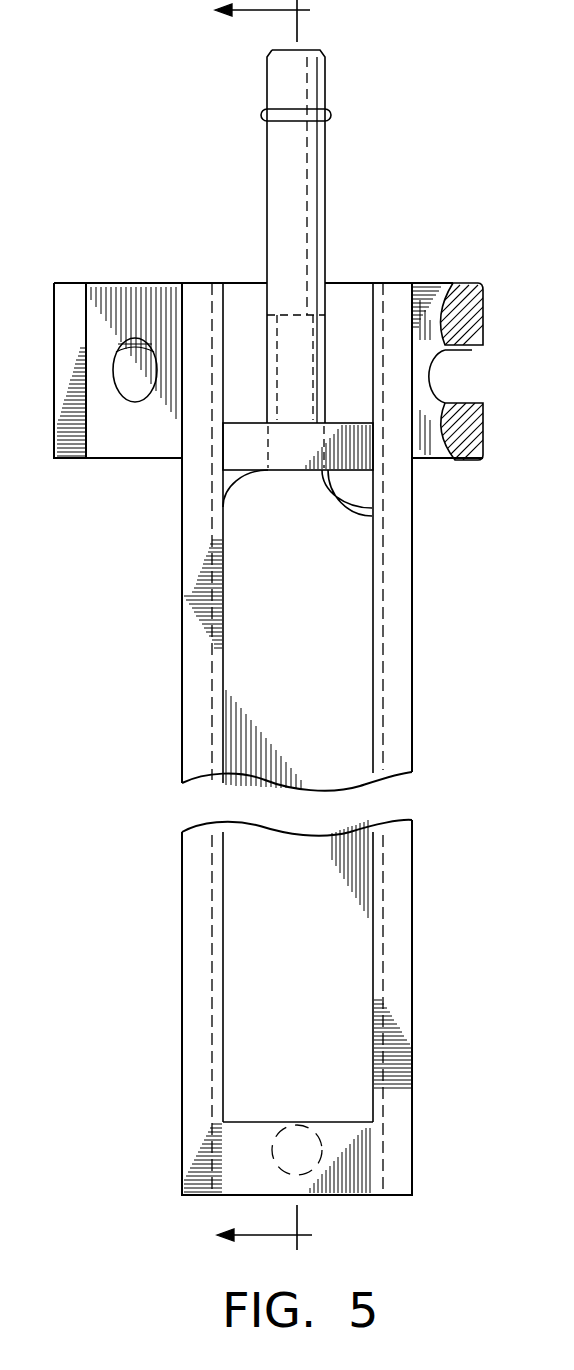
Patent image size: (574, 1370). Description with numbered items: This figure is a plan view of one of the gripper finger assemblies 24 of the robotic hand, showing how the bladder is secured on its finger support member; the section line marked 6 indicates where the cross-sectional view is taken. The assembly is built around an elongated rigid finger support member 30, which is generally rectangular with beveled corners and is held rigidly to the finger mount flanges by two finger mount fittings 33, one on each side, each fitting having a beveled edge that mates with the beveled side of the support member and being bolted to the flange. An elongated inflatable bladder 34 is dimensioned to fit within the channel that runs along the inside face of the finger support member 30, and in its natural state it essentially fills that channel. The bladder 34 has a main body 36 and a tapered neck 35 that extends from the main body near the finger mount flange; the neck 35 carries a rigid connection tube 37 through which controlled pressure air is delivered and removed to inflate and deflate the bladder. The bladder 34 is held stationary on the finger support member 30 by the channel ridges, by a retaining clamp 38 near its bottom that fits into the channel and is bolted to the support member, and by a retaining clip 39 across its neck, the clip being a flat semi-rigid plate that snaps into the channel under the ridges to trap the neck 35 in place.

The section line 6- 6 is at (250, 630).
The gripper finger assembly 24 is at (182, 641).
The finger support member 30 is at (398, 636).
The finger mount fitting 33 is at (160, 290).
The inflatable bladder 34 is at (340, 705).
The tapered neck 35 is at (333, 488).
The main body 36 is at (347, 757).
The rigid connection tube 37 is at (280, 196).
The retaining clamp 38 is at (244, 1130).
The retaining clip 39 is at (337, 432).